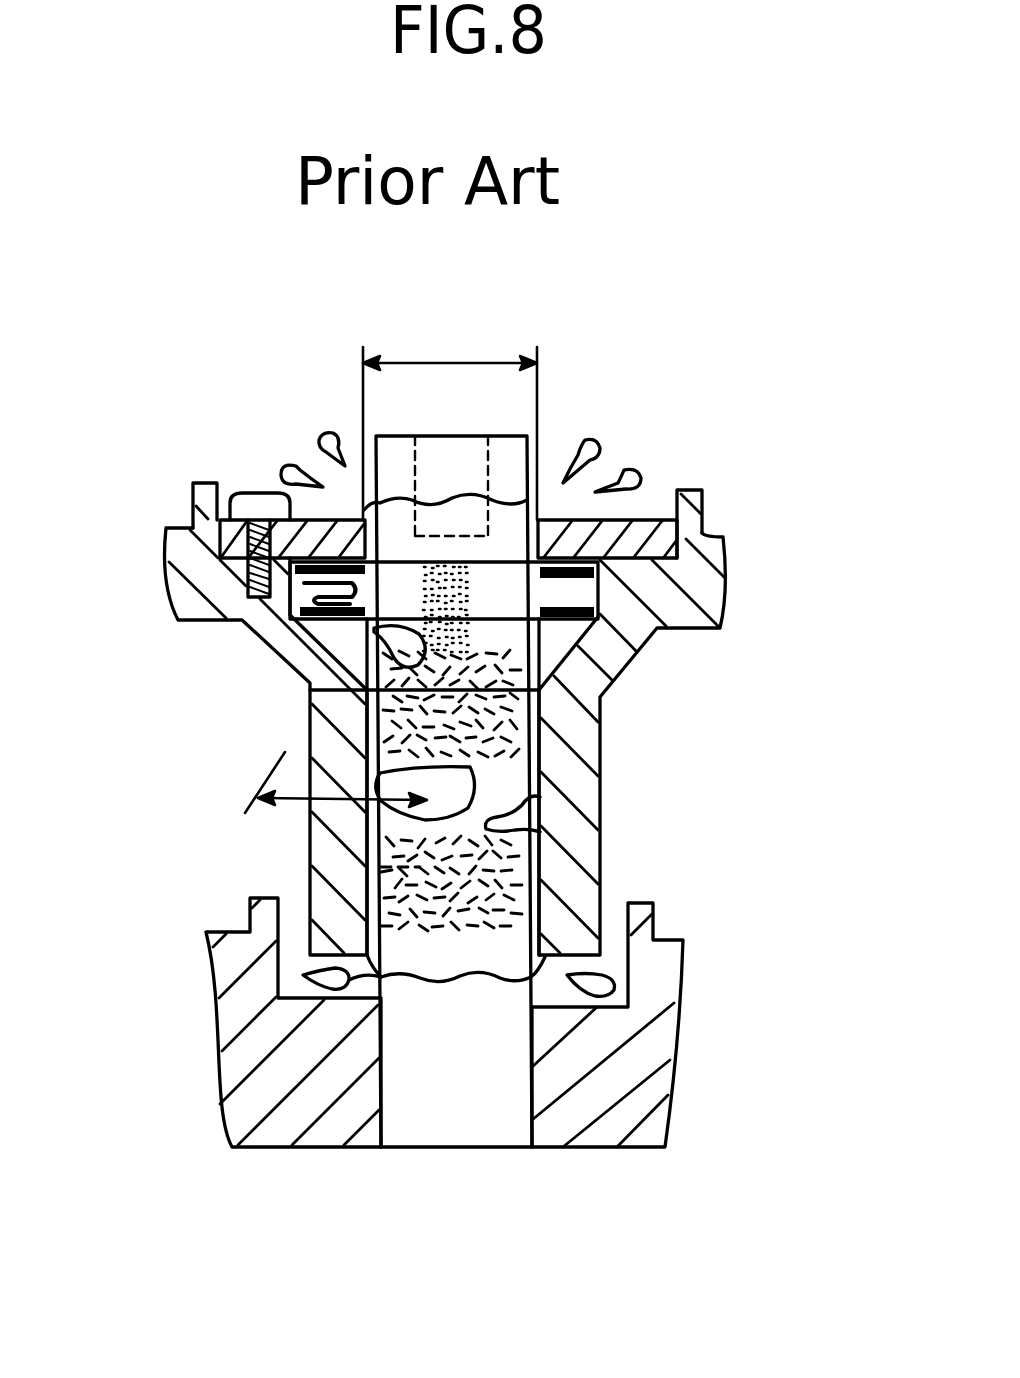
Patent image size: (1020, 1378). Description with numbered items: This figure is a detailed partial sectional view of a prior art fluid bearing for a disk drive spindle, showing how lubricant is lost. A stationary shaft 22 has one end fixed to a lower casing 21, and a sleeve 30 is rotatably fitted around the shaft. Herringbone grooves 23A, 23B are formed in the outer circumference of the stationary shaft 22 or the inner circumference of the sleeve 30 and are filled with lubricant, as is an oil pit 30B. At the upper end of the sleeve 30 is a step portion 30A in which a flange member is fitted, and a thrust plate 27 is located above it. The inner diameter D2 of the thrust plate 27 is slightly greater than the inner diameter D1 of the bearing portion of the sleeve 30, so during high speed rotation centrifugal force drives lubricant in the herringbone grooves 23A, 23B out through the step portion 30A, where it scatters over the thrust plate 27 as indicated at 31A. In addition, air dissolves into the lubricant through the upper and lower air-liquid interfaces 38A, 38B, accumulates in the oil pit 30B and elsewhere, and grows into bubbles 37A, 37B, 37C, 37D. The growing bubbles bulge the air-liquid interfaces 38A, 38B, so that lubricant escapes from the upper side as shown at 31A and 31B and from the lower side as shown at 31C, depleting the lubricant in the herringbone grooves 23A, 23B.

The lower casing 21 is at (603, 1133).
The stationary shaft 22 is at (463, 1125).
The herringbone groove 23A is at (310, 683).
The herringbone groove 23B is at (378, 866).
The thrust plate 27 is at (645, 520).
The sleeve 30 is at (545, 955).
The step portion 30A is at (722, 583).
The oil pit 30B is at (540, 800).
The lubricant 31A is at (283, 466).
The lubricant 31B is at (600, 462).
The lubricant 31C is at (303, 976).
The bubble 37A is at (290, 588).
The bubble 37B is at (380, 640).
The bubble 37C is at (470, 787).
The bubble 37D is at (505, 826).
The air-liquid interface 38A is at (514, 504).
The air-liquid interface 38B is at (548, 958).
The inner diameter of bearing portion of sleeve D1 is at (295, 800).
The inner diameter of thrust plate D2 is at (450, 421).